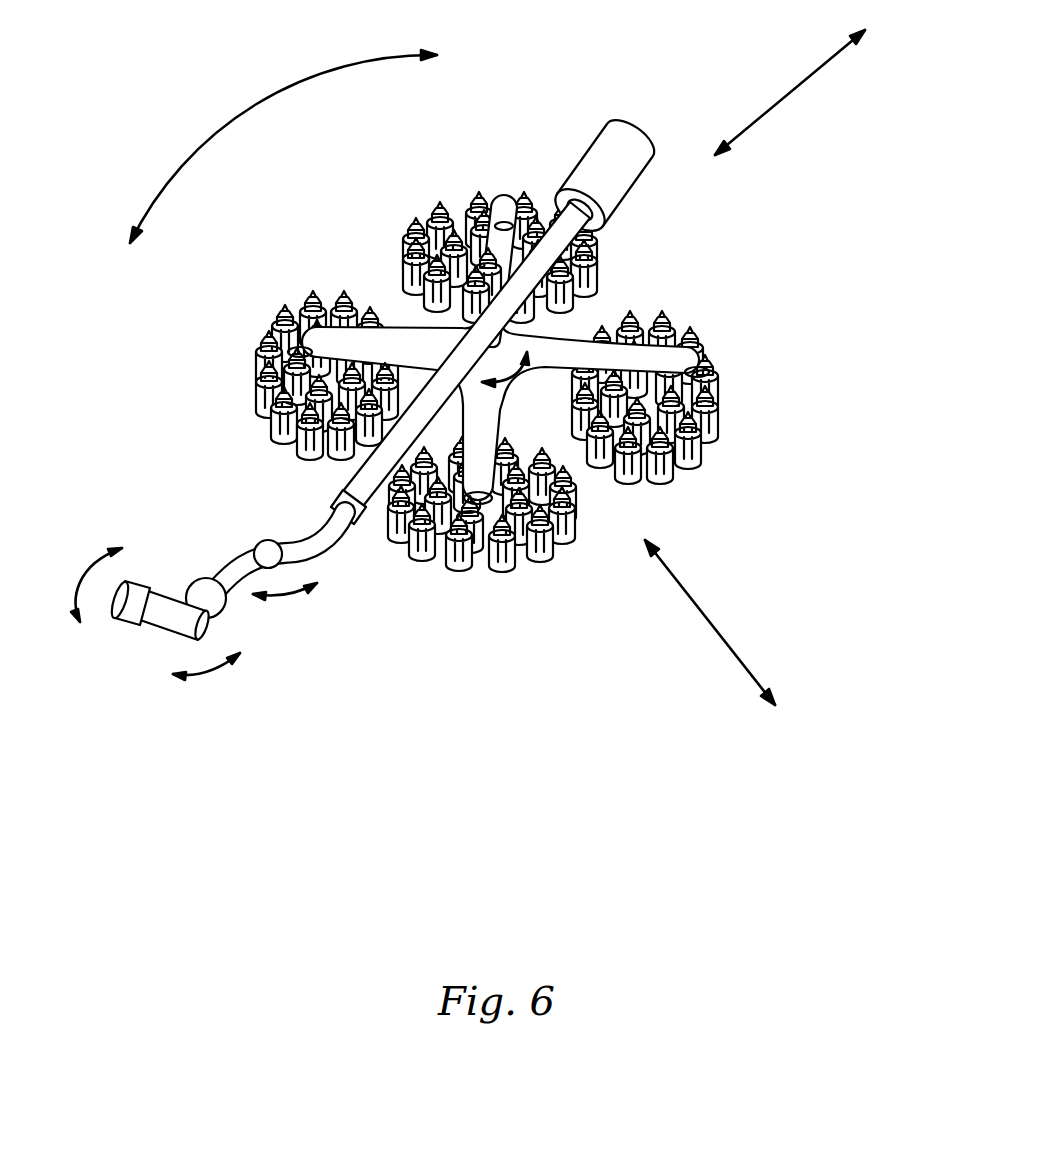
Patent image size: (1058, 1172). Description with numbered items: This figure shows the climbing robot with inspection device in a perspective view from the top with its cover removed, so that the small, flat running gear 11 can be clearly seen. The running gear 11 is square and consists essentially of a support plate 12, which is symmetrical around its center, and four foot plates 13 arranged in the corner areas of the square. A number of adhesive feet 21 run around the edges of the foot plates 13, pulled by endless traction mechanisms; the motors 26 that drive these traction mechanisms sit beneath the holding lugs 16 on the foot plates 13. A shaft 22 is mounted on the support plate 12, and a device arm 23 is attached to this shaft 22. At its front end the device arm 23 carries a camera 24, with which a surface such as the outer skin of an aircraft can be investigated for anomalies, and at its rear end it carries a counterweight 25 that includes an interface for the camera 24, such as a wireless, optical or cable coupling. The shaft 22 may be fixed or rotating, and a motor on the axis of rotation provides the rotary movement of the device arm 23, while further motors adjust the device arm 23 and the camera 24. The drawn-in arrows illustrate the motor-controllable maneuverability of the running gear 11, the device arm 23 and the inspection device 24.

The running gear 11 is at (468, 396).
The support plate 12 is at (500, 324).
The foot plates 13 is at (476, 393).
The holding lugs 16 is at (347, 207).
The adhesive feet 21 is at (537, 547).
The shaft 22 is at (500, 340).
The device arm 23 is at (243, 543).
The camera 24 is at (157, 583).
The counterweight 25 is at (620, 153).
The motors 26 is at (477, 540).